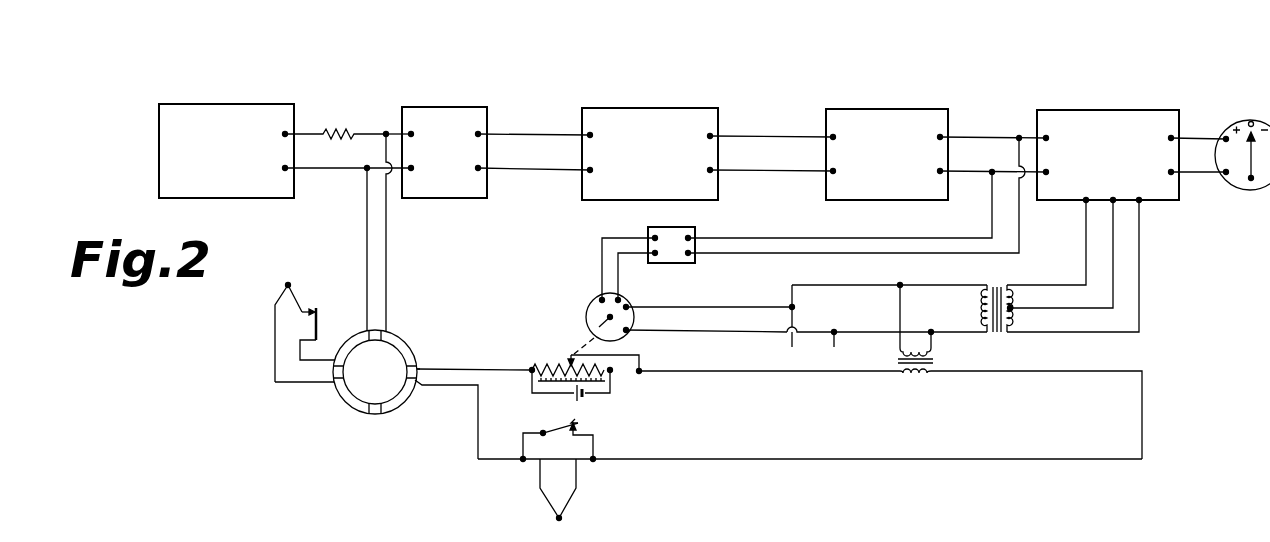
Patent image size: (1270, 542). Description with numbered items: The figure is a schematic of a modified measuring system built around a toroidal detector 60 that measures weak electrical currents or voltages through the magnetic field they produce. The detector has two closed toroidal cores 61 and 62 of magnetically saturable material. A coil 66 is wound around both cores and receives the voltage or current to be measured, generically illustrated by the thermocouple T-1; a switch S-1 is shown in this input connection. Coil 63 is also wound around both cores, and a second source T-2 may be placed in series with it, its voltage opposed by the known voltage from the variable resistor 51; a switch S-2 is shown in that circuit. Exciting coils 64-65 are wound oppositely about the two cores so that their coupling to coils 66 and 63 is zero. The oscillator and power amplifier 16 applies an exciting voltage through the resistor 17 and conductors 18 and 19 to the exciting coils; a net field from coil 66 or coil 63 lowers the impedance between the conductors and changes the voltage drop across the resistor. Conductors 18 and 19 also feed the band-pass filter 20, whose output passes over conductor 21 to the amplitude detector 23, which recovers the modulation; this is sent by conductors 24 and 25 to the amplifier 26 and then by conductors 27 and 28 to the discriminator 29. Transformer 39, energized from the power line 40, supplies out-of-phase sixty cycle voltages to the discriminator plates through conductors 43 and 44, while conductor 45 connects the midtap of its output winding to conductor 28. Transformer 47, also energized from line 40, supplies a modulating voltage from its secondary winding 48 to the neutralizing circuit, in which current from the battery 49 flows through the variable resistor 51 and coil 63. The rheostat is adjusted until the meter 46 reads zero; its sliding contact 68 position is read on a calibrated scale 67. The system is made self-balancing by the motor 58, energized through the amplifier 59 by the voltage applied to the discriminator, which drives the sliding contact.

The oscillator and power amplifier 16 is at (232, 104).
The resistor 17 is at (345, 128).
The conductor 18 is at (390, 207).
The conductor 19 is at (367, 206).
The filter 20 is at (438, 107).
The conductor 21 is at (512, 130).
The amplitude detector 23 is at (651, 108).
The conductor 24 is at (543, 172).
The conductor 25 is at (781, 173).
The amplifier 26 is at (887, 109).
The conductor 27 is at (977, 137).
The conductor 28 is at (978, 174).
The discriminator 29 is at (1084, 110).
The transformer 39 is at (997, 293).
The power line 40 is at (833, 347).
The conductor 43 is at (1140, 222).
The conductor 44 is at (1082, 213).
The conductor 45 is at (1101, 312).
The meter 46 is at (1240, 119).
The transformer 47 is at (935, 362).
The secondary winding 48 is at (924, 378).
The battery 49 is at (584, 398).
The variable resistor 51 is at (535, 363).
The motor 58 is at (589, 309).
The amplifier 59 is at (685, 229).
The toroidal detector 60 is at (362, 432).
The toroidal core 61 is at (413, 349).
The toroidal core 62 is at (386, 409).
The coil 63 is at (412, 385).
The coils 64-65 is at (388, 330).
The coil 66 is at (336, 384).
The scale 67 is at (611, 383).
The sliding contact 68 is at (570, 359).
The switch S-1 is at (320, 321).
The switch S-2 is at (553, 428).
The thermocouple T-1 is at (286, 288).
The source of voltage T-2 is at (566, 512).